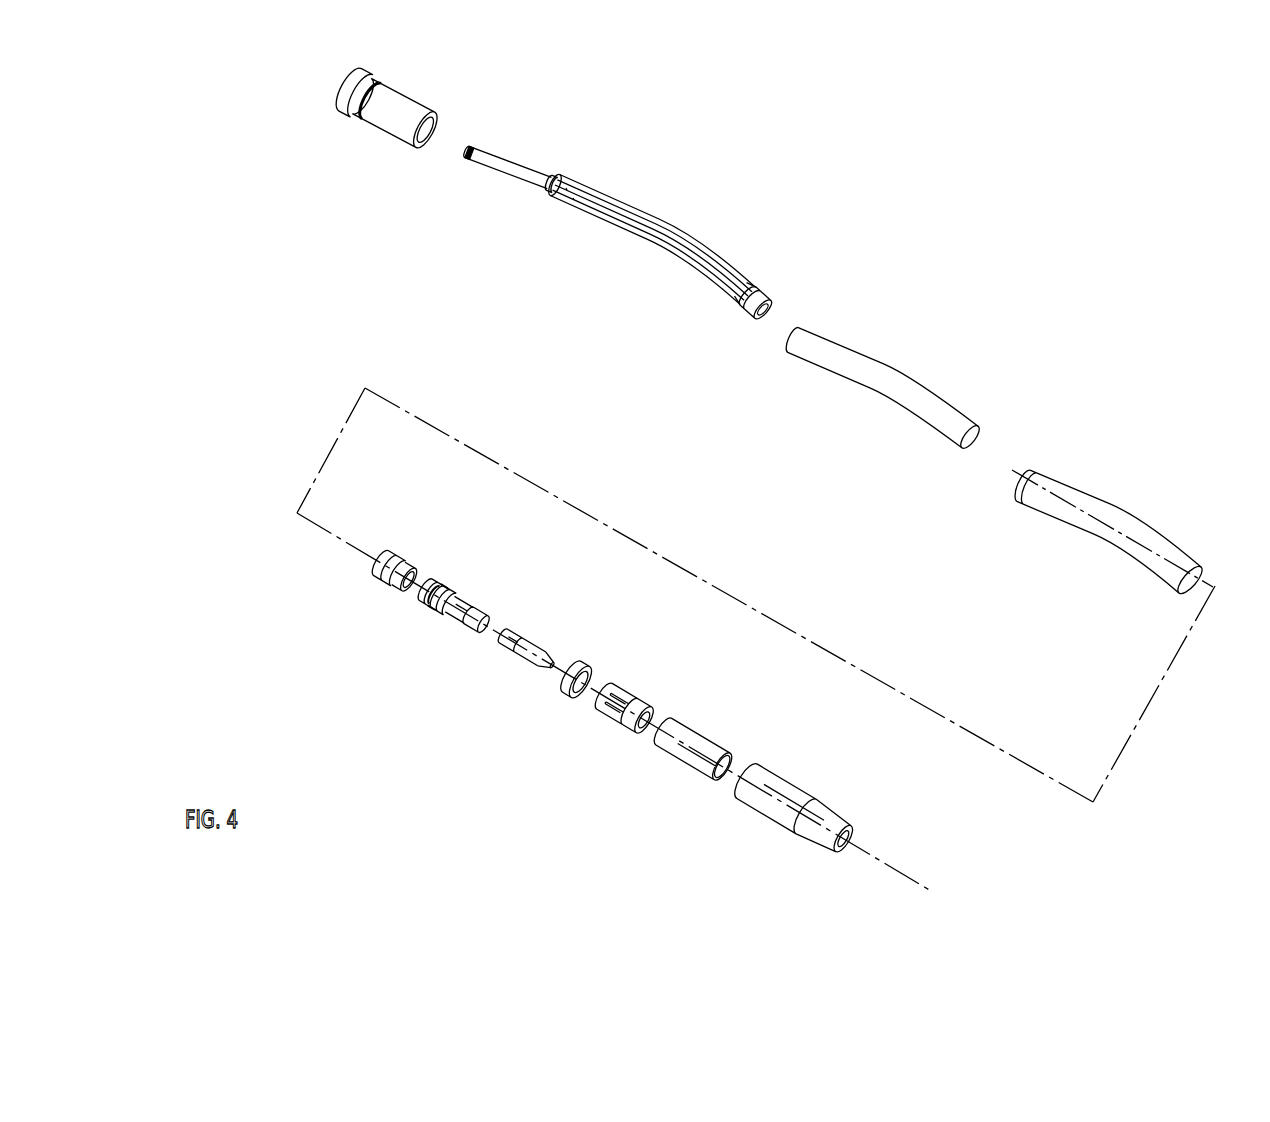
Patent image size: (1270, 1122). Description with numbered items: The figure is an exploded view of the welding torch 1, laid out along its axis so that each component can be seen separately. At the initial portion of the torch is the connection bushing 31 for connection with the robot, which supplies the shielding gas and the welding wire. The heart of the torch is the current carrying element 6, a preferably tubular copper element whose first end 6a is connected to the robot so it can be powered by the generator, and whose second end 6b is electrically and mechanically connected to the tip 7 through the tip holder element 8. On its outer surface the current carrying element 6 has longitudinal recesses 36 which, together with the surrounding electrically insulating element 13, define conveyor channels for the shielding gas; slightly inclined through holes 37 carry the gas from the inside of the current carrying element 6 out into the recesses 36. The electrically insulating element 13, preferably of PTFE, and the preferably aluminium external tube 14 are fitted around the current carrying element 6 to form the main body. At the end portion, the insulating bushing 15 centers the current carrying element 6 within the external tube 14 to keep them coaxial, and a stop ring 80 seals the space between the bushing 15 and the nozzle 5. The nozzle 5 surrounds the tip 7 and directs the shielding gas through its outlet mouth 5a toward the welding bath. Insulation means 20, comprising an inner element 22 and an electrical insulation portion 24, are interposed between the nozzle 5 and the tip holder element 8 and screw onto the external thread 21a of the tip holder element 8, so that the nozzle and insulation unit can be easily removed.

The torch 1 is at (1086, 229).
The nozzle 5 is at (842, 790).
The outlet mouth 5a is at (870, 835).
The current carrying element 6 is at (640, 202).
The first end 6a is at (586, 130).
The second end 6b is at (776, 278).
The tip 7 is at (490, 686).
The tip holder element 8 is at (416, 652).
The electrically insulating element 13 is at (901, 322).
The external tube 14 is at (1112, 467).
The insulating bushing 15 is at (345, 592).
The insulation means 20 is at (601, 728).
The external thread 21a is at (449, 581).
The inner element 22 is at (605, 742).
The electrical insulation portion 24 is at (705, 807).
The connection bushing 31 is at (400, 113).
The recesses 36 is at (637, 232).
The through holes 37 is at (573, 200).
The stop ring 80 is at (550, 710).